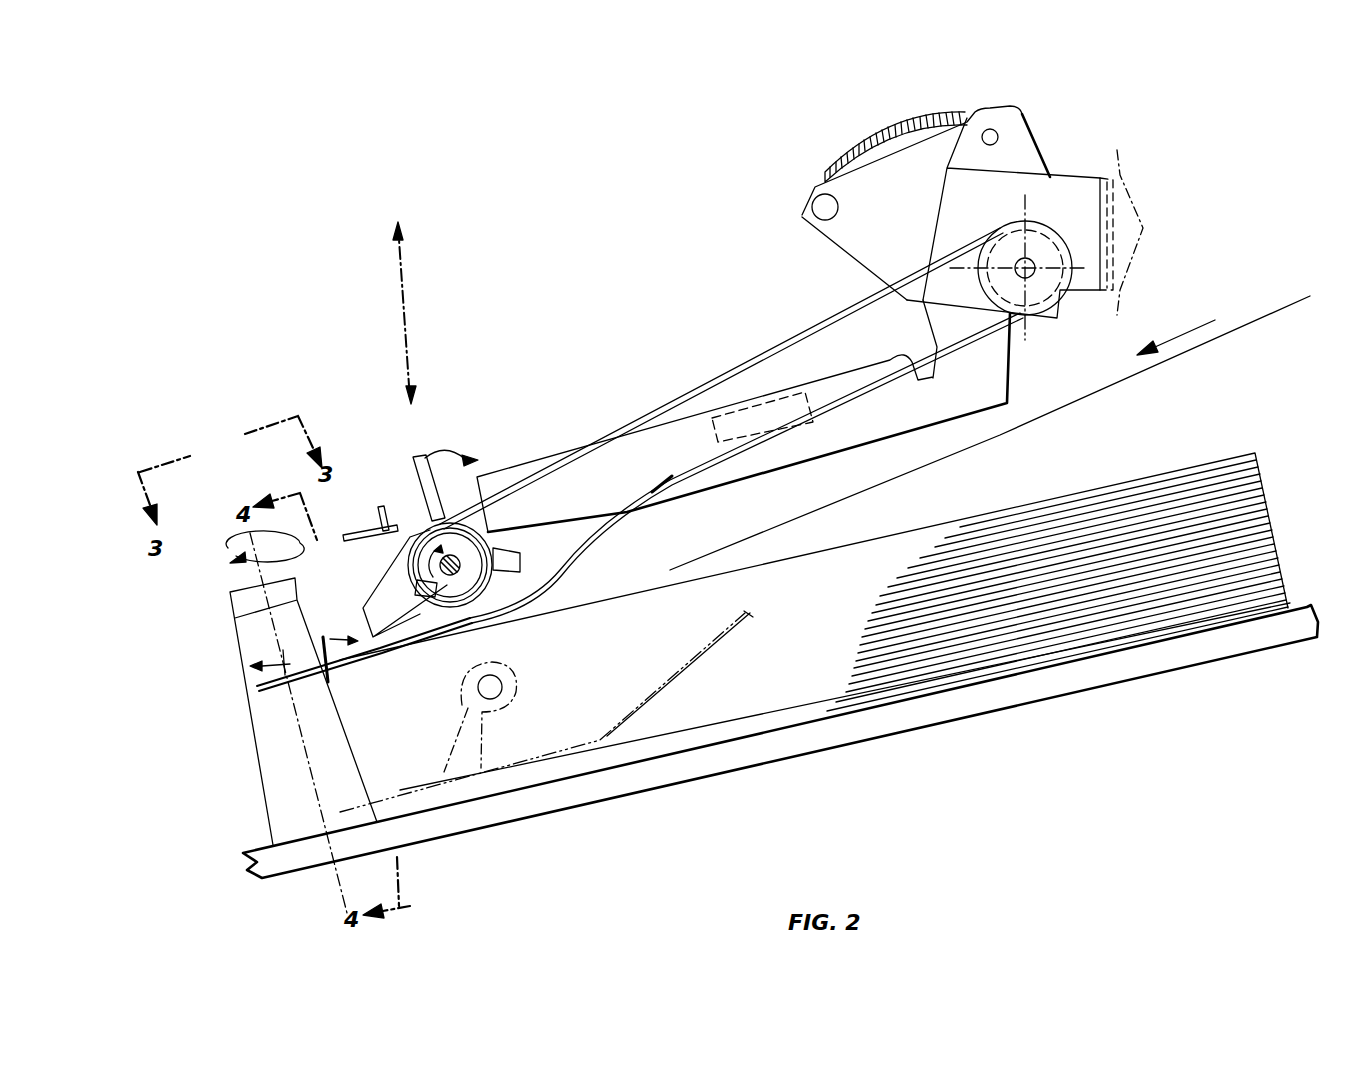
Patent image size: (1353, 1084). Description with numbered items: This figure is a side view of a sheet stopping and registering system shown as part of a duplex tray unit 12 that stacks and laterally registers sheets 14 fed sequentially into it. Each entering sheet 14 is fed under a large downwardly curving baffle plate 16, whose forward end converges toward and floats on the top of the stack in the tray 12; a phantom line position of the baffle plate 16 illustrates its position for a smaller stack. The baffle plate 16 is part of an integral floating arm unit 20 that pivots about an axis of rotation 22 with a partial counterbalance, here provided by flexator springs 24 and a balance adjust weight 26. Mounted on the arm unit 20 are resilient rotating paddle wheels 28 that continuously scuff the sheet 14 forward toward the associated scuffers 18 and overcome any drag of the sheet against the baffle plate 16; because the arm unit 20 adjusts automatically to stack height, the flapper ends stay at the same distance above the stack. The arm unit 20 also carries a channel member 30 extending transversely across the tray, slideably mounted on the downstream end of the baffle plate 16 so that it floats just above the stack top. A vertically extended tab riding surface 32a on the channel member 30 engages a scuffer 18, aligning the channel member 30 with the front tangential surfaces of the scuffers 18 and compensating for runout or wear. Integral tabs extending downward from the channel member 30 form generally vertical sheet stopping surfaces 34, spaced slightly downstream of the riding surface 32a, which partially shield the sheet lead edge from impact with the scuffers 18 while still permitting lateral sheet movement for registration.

The duplex tray unit 12 is at (850, 727).
The sheet 14 is at (1097, 393).
The baffle plate 16 is at (597, 547).
The scuffer 18 is at (243, 614).
The integral floating arm unit 20 is at (539, 438).
The axis of rotation 22 is at (1027, 262).
The flexator springs 24 is at (890, 152).
The balance adjust weight 26 is at (748, 408).
The paddle wheel 28 is at (430, 493).
The channel member 30 is at (334, 640).
The tab riding surface 32a is at (327, 642).
The sheet stopping surface 34 is at (327, 677).